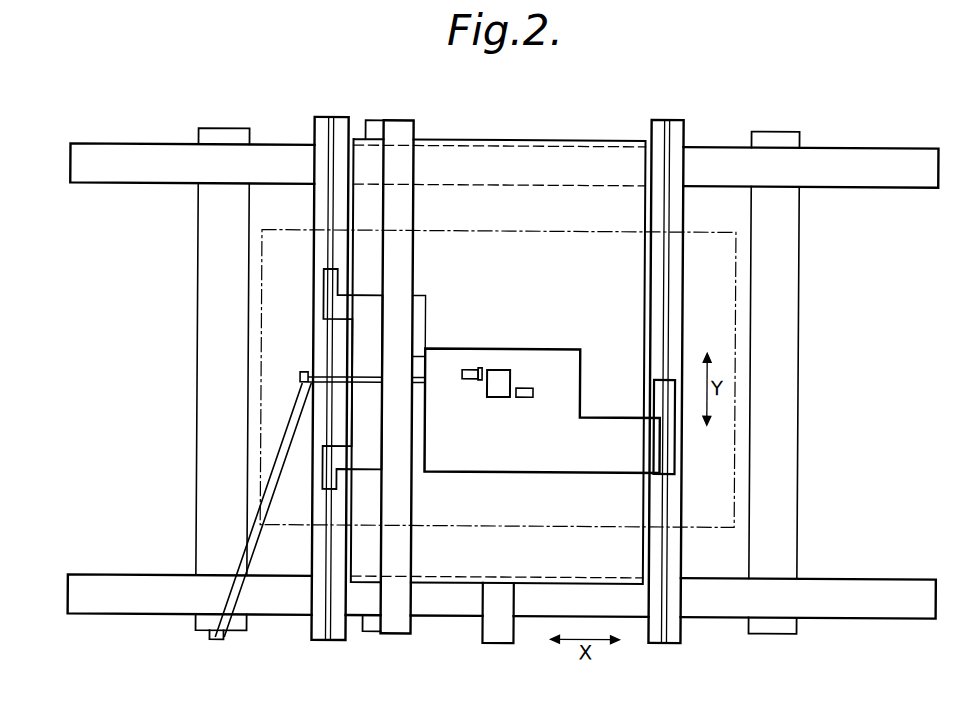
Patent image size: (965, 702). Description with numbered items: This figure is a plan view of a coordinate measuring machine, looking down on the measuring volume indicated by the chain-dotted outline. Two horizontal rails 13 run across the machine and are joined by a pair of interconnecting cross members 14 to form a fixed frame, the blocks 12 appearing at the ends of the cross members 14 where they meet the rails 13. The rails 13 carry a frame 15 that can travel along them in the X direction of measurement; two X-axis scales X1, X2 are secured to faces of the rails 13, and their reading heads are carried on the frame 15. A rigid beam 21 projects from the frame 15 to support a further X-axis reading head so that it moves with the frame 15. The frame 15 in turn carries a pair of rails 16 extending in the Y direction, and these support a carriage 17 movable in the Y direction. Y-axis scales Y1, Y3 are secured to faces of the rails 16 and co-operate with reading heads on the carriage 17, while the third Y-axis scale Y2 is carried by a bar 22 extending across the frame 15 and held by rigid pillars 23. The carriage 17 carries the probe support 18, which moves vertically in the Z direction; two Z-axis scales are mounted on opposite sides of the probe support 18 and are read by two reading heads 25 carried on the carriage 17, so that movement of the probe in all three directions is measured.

The support blocks 12 is at (222, 136).
The horizontal rails 13 is at (502, 382).
The cross members 14 is at (200, 365).
The frame 15 is at (544, 152).
The rails 16 is at (506, 343).
The carriage 17 is at (519, 449).
The probe support 18 is at (499, 372).
The rigid beam 21 is at (498, 630).
The bar 22 is at (425, 374).
The rigid pillars 23 is at (376, 124).
The reading heads 25 is at (468, 370).
The scale X1 is at (856, 574).
The scale X2 is at (867, 193).
The scale Y1 is at (355, 116).
The scale Y2 is at (414, 128).
The scale Y3 is at (646, 365).